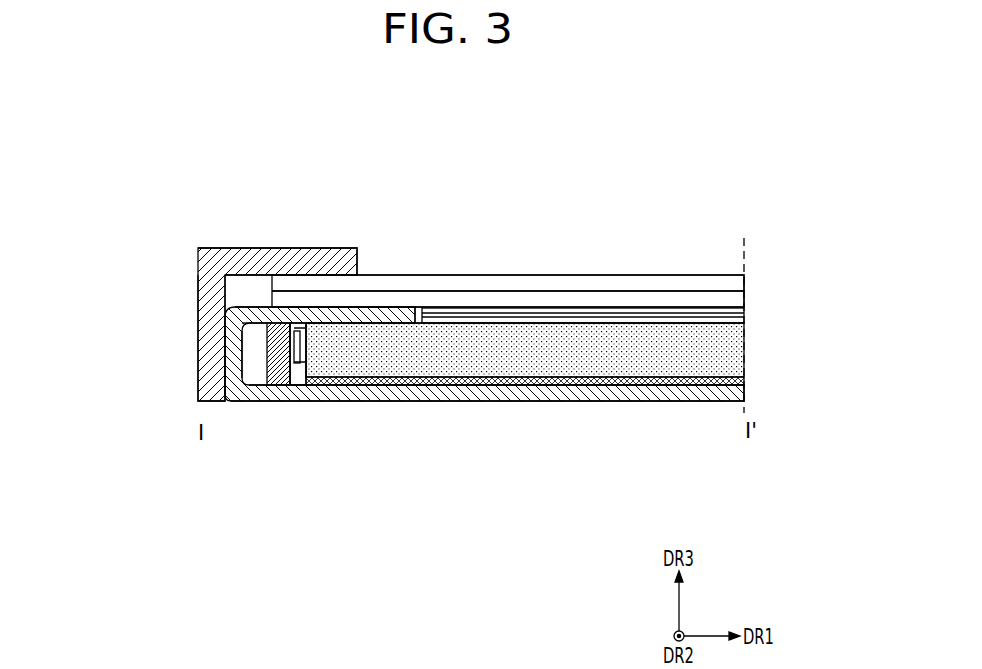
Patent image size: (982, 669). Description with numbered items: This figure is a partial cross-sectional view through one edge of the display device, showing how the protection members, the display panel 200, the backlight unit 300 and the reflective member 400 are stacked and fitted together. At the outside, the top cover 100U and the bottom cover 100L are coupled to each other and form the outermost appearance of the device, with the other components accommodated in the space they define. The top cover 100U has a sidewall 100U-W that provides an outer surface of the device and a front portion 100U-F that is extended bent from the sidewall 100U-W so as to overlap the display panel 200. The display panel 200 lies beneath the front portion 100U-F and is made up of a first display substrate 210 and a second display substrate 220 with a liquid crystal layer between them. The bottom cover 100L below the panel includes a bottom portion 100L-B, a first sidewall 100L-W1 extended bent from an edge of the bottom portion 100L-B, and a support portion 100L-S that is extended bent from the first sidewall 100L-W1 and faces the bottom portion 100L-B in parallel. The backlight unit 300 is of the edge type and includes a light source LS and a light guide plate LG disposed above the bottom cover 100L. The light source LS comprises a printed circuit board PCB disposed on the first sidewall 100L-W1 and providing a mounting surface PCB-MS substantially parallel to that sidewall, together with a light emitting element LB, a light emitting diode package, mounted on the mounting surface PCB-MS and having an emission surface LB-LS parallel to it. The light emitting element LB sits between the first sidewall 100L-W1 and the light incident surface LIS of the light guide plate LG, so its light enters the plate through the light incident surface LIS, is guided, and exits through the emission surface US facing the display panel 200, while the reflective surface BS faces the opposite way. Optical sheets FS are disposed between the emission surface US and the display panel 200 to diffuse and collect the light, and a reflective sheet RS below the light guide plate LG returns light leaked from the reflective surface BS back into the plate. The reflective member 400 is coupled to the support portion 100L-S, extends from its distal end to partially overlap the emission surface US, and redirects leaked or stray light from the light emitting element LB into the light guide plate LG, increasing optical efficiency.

The top cover 100U is at (260, 190).
The sidewall 100U-W is at (208, 290).
The front portion 100U-F is at (225, 258).
The display panel 200 is at (812, 258).
The second display substrate 220 is at (745, 279).
The first display substrate 210 is at (745, 300).
The bottom cover 100L is at (100, 328).
The support portion 100L-S is at (258, 335).
The first sidewall 100L-W1 is at (228, 360).
The bottom portion 100L-B is at (256, 396).
The reflective member 400 is at (360, 318).
The backlight unit 300 is at (355, 490).
The light source LS is at (333, 452).
The printed circuit board PCB is at (271, 388).
The mounting surface PCB-MS is at (301, 327).
The light emitting element LB is at (305, 387).
The emission surface LB-LS is at (299, 358).
The light guide plate LG is at (343, 372).
The light incident surface LIS is at (308, 338).
The emission surface US is at (724, 324).
The reflective surface BS is at (722, 377).
The optical sheets FS is at (748, 317).
The reflective sheet RS is at (745, 385).